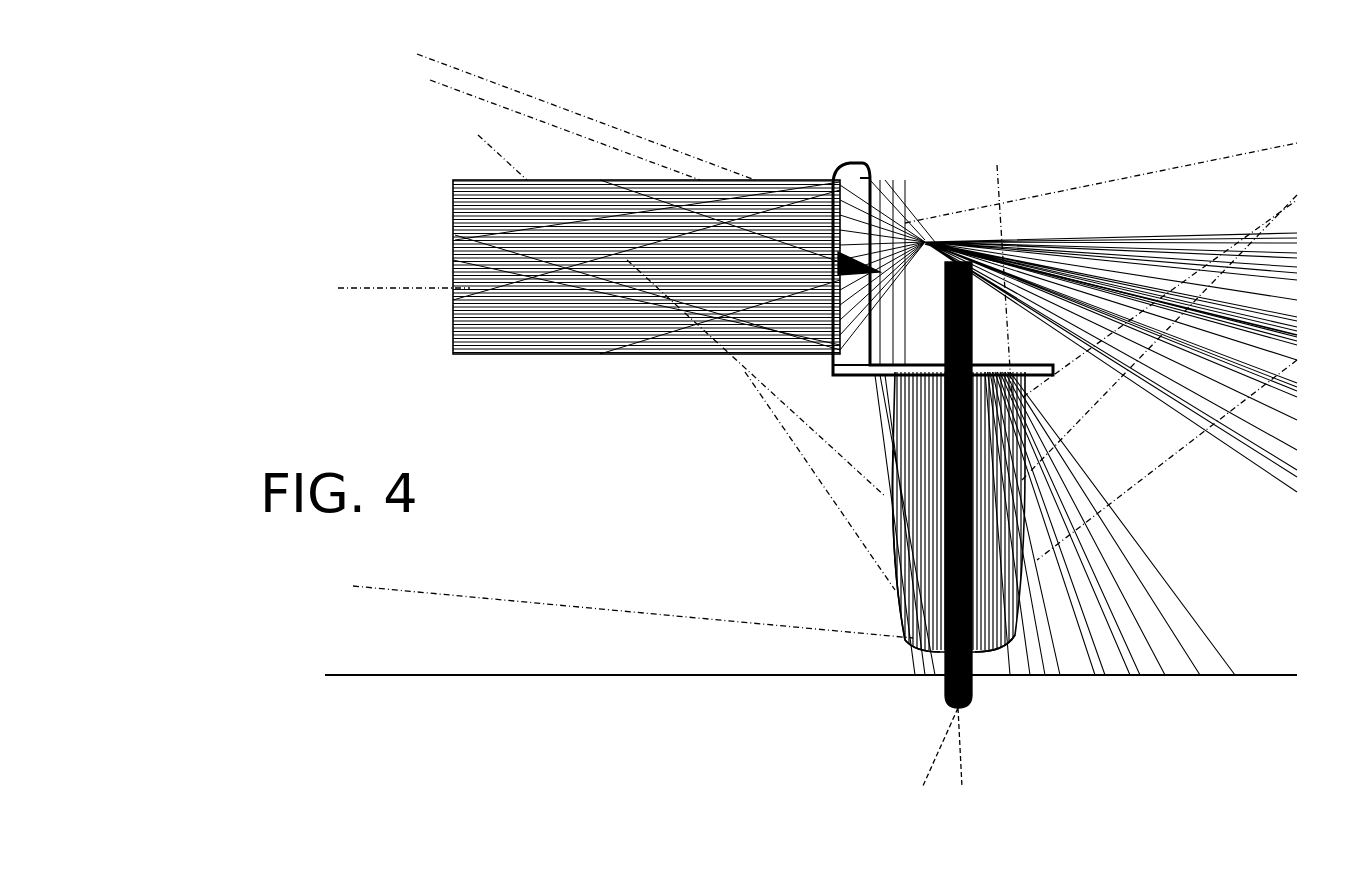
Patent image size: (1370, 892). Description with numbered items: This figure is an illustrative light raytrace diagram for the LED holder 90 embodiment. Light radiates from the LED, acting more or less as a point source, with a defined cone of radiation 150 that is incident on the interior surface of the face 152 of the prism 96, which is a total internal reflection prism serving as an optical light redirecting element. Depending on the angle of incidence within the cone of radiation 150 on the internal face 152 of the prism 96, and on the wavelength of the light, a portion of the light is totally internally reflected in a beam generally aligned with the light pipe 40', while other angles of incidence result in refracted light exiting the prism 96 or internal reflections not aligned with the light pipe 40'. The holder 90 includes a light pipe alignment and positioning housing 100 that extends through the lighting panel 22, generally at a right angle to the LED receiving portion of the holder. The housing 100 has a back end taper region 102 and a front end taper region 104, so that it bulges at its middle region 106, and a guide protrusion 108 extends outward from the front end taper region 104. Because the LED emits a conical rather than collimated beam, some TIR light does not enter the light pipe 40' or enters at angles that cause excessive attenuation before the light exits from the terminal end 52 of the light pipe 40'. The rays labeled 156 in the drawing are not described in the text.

The lighting panel 22 is at (593, 456).
The cone of radiation 150 is at (890, 240).
The LED holder 90 is at (905, 225).
The face of the prism 152 is at (990, 305).
The prism 96 is at (1060, 338).
The back end taper region 102 is at (920, 372).
The downward light rays 156 is at (1050, 368).
The light pipe alignment and positioning housing 100 is at (892, 500).
The light pipe 40' is at (1082, 525).
The middle region 106 is at (892, 570).
The front end taper region 104 is at (910, 640).
The guide protrusion 108 is at (1010, 650).
The terminal end of the light pipe 52 is at (960, 710).